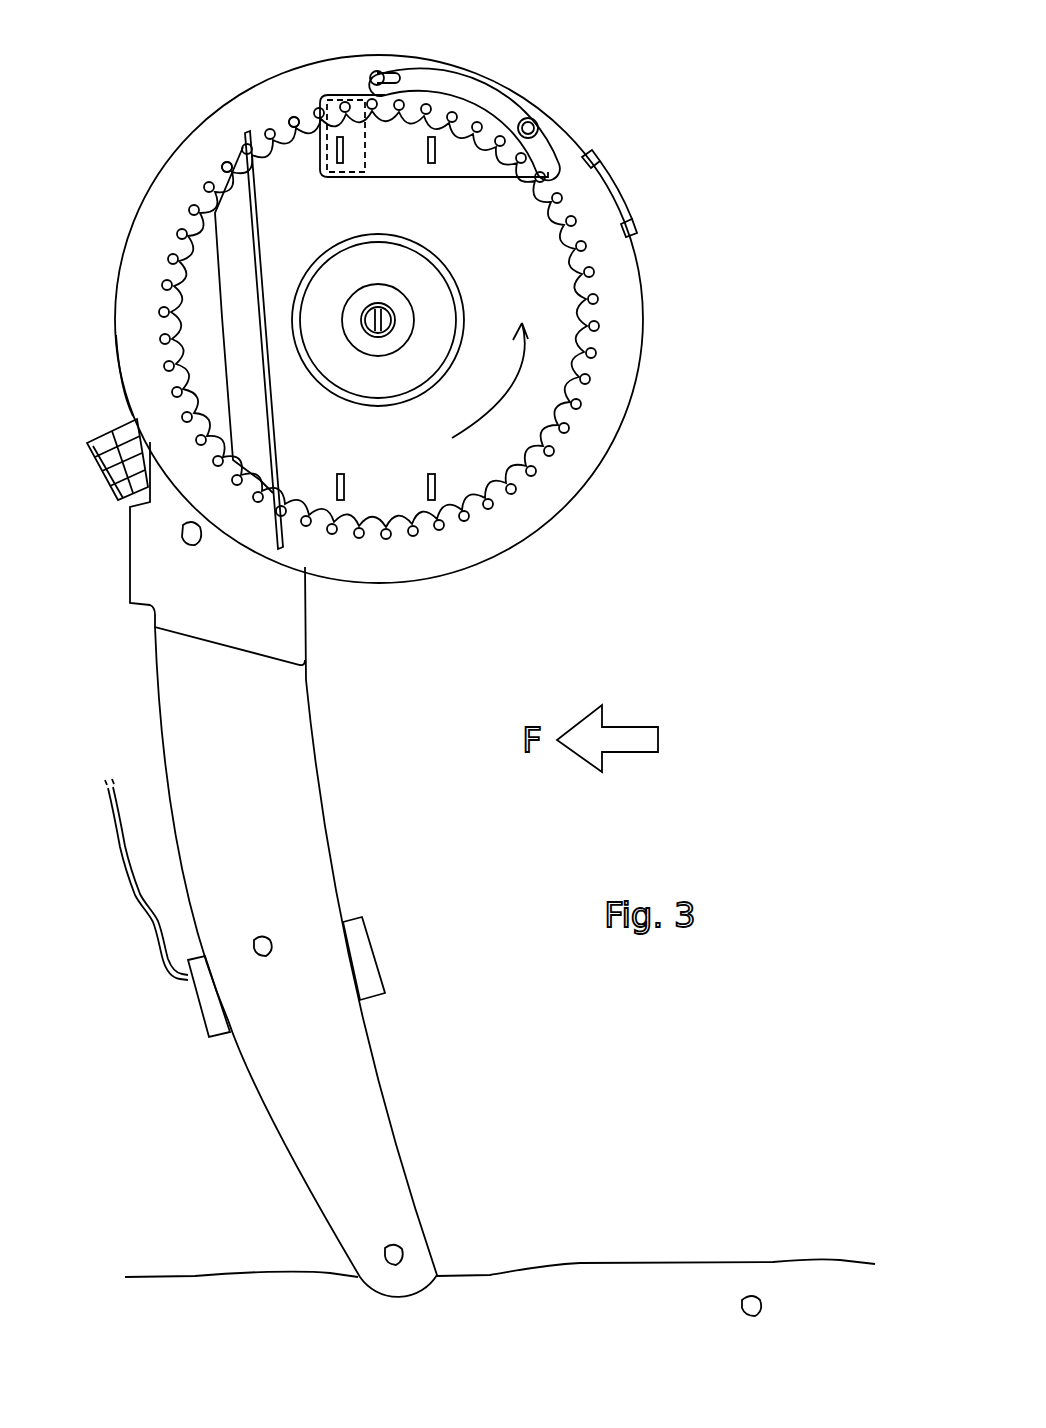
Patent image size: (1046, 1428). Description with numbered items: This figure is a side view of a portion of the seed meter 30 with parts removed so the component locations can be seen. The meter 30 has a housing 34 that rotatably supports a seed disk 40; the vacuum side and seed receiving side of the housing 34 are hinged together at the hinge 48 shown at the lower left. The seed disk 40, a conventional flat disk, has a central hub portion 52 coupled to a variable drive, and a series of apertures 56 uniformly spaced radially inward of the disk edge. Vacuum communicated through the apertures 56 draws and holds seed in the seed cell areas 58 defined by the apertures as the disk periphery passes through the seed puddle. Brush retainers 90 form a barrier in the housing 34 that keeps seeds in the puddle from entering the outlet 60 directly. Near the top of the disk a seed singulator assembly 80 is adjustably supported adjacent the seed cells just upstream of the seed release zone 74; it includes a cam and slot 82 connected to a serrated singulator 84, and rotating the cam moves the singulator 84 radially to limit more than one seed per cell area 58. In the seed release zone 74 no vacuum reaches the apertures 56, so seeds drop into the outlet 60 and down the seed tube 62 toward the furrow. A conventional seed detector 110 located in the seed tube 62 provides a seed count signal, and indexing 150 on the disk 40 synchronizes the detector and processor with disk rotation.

The seed meter 30 is at (697, 242).
The housing 34 is at (130, 410).
The seed disk 40 is at (557, 475).
The hinge 48 is at (103, 433).
The hub portion 52 is at (393, 307).
The apertures 56 is at (258, 133).
The seed cell areas 58 is at (235, 162).
The outlet 60 is at (228, 596).
The seed tube 62 is at (323, 813).
The seed release zone 74 is at (170, 182).
The seed singulator assembly 80 is at (482, 77).
The cam and slot 82 is at (369, 78).
The serrated singulator 84 is at (523, 115).
The brush retainers 90 is at (262, 243).
The seed detector 110 is at (175, 1026).
The indexing 150 is at (428, 150).